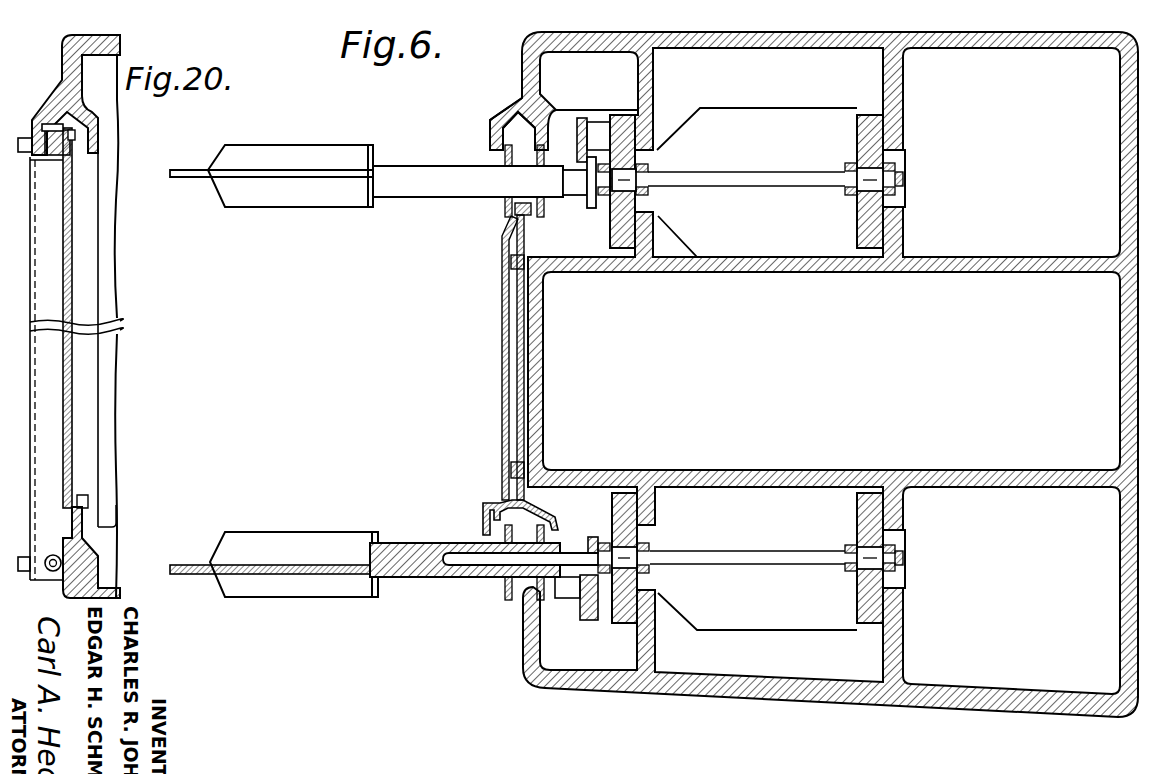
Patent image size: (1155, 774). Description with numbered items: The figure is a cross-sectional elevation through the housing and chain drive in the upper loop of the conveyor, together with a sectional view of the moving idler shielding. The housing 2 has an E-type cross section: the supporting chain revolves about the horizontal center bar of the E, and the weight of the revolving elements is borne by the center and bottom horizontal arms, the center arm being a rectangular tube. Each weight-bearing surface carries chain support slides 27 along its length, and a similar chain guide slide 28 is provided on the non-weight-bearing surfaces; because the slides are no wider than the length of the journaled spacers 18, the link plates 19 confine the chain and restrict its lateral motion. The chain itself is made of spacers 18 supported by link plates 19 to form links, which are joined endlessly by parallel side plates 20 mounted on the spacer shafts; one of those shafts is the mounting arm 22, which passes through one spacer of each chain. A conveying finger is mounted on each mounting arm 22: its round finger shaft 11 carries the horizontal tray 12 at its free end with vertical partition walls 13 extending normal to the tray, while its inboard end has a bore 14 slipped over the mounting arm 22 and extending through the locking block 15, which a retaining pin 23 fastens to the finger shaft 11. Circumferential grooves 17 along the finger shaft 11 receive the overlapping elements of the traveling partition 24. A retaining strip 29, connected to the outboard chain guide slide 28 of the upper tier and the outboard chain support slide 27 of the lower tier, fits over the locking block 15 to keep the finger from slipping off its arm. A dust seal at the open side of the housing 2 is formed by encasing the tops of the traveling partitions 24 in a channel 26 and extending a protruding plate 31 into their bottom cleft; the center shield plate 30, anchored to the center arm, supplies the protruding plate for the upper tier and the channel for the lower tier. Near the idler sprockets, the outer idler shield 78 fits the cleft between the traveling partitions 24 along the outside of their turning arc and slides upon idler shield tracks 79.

In FIG. 20, the housing 2 is at (62, 44).
In FIG. 6, the housing 2 is at (958, 705).
In FIG. 6, the finger shaft 11 is at (418, 578).
In FIG. 6, the horizontal tray 12 is at (275, 180).
In FIG. 6, the vertical partition walls 13 is at (320, 152).
In FIG. 6, the bore 14 is at (482, 568).
In FIG. 6, the locking block 15 is at (580, 548).
In FIG. 6, the circumferential grooves 17 is at (505, 178).
In FIG. 6, the journaled spacers 18 is at (640, 200).
In FIG. 6, the link plates 19 is at (852, 164).
In FIG. 6, the side plates 20 is at (845, 170).
In FIG. 6, the mounting arm 22 is at (741, 186).
In FIG. 6, the retaining pin 23 is at (576, 585).
In FIG. 6, the traveling partition 24 is at (505, 215).
In FIG. 6, the channel 26 is at (510, 118).
In FIG. 6, the chain support slides 27 is at (642, 262).
In FIG. 6, the chain guide slide 28 is at (620, 114).
In FIG. 6, the retaining strip 29 is at (580, 117).
In FIG. 6, the center shield plate 30 is at (502, 372).
In FIG. 6, the protruding plate 31 is at (515, 228).
In FIG. 20, the outer idler shield 78 is at (72, 246).
In FIG. 20, the idler shield tracks 79 is at (46, 130).